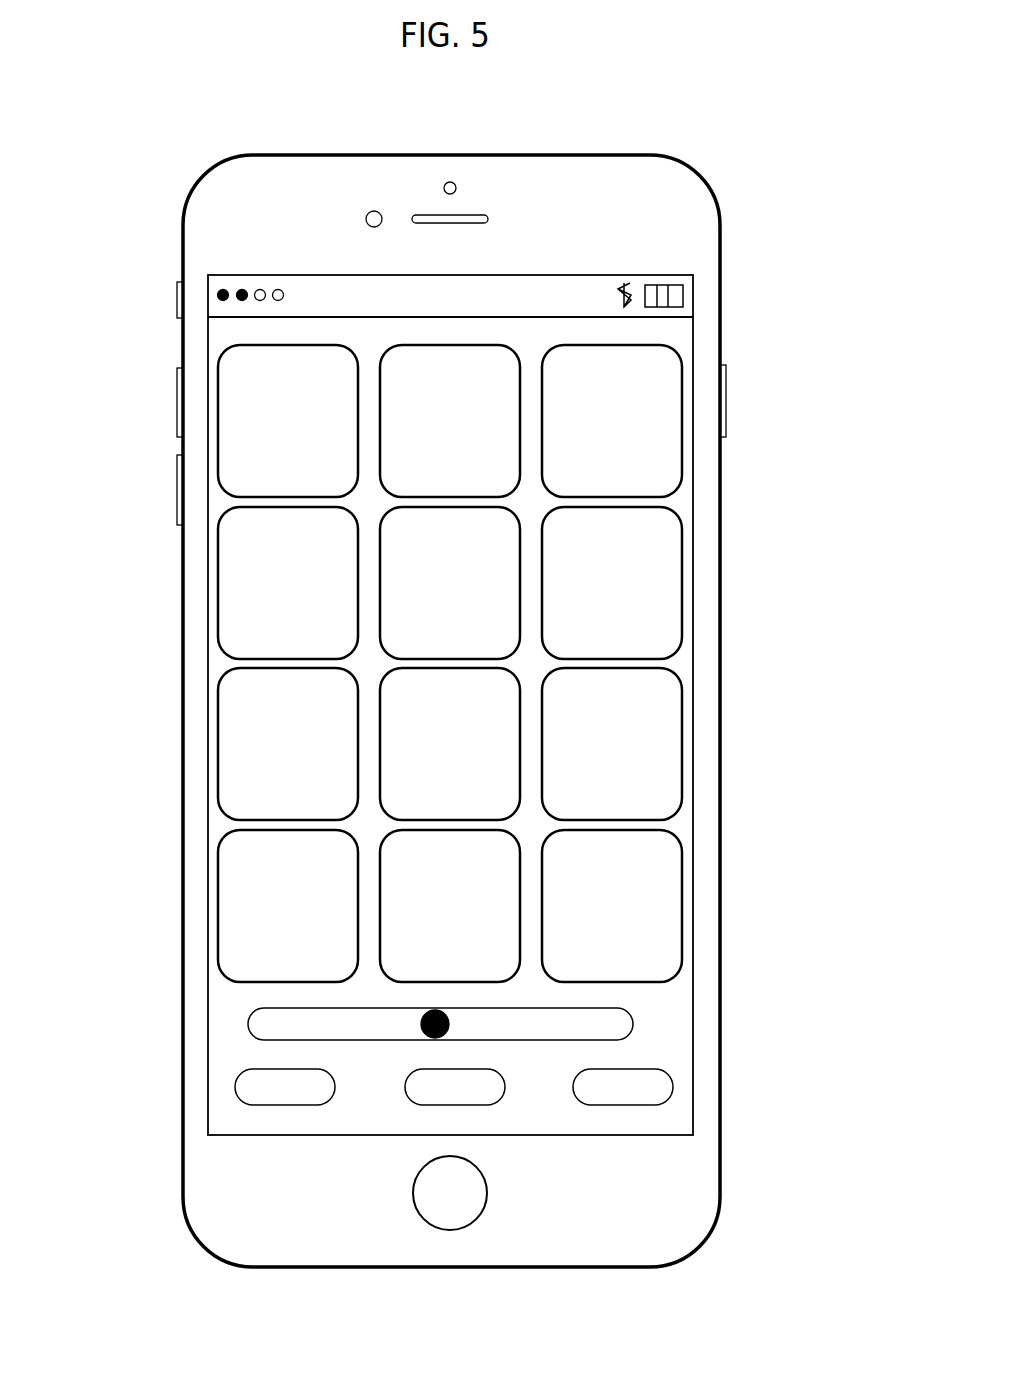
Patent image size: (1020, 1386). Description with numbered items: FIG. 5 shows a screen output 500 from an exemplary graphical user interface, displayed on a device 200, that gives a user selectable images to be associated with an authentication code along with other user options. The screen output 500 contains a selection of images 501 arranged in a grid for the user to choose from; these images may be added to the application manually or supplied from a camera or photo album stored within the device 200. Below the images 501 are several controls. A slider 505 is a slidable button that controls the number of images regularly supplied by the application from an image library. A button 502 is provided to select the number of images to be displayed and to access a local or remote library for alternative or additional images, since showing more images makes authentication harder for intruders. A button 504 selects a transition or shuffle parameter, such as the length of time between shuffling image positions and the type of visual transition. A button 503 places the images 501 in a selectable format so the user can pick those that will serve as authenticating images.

The device 200 is at (721, 252).
The screen output 500 is at (222, 340).
The images 501 is at (222, 655).
The button 502 is at (252, 1088).
The button 503 is at (647, 1087).
The button 504 is at (418, 1104).
The slider 505 is at (633, 1023).